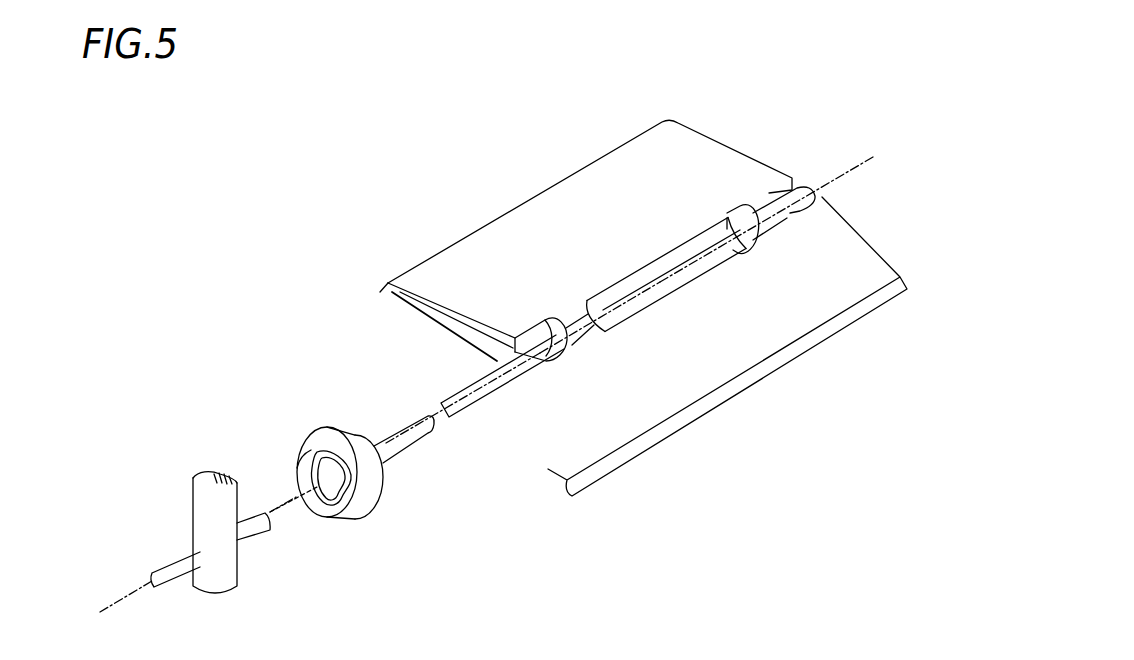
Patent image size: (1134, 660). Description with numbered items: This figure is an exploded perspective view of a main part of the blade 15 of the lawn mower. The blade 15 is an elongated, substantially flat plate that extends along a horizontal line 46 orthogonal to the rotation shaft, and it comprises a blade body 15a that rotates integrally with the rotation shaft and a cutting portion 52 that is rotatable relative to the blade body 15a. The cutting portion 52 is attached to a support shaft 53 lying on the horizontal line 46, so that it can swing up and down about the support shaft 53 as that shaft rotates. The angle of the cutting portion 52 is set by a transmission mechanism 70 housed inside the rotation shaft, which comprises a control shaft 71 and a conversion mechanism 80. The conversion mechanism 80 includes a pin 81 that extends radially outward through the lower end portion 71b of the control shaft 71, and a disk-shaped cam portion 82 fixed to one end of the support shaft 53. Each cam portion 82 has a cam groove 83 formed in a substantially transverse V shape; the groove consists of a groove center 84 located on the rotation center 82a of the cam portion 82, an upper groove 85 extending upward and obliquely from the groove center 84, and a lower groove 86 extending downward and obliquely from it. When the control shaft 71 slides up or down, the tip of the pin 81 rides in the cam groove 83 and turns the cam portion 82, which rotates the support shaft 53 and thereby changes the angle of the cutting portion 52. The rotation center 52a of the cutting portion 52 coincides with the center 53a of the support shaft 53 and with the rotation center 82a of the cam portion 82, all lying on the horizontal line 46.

The blade 15 is at (727, 346).
The blade body 15a is at (706, 412).
The horizontal line 46 is at (527, 351).
The cutting portion 52 is at (543, 211).
The rotation center 52a is at (600, 317).
The support shaft 53 is at (413, 433).
The center 53a is at (766, 219).
The transmission mechanism 70 is at (162, 497).
The control shaft 71 is at (215, 532).
The lower end portion 71b is at (191, 497).
The conversion mechanism 80 is at (354, 529).
The pin 81 is at (276, 568).
The cam portion 82 is at (383, 486).
The rotation center 82a is at (463, 398).
The cam groove 83 is at (271, 414).
The groove center 84 is at (297, 469).
The upper groove 85 is at (318, 451).
The lower groove 86 is at (277, 513).